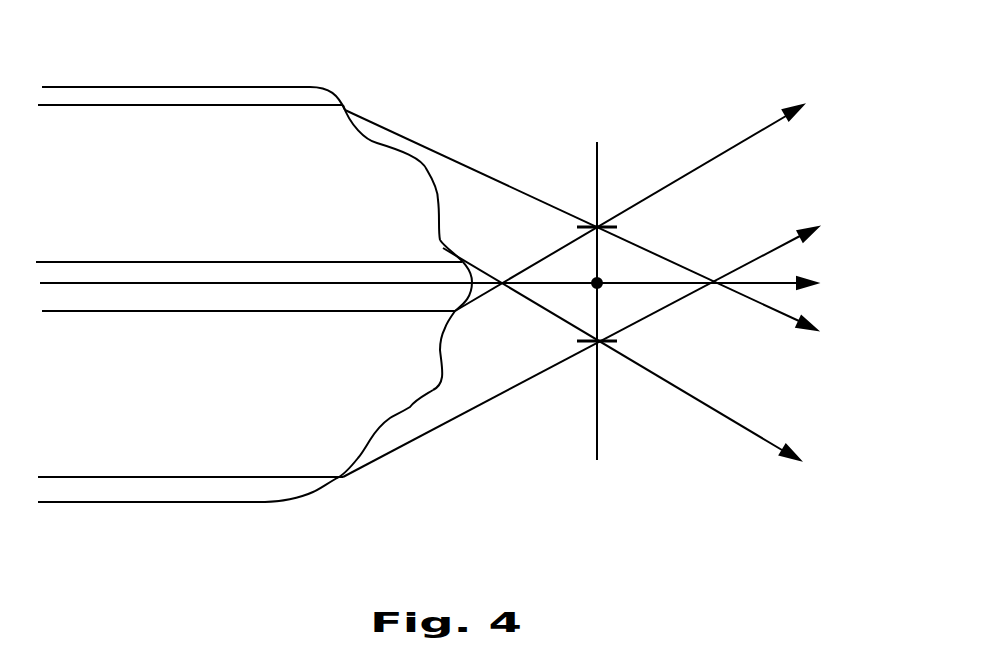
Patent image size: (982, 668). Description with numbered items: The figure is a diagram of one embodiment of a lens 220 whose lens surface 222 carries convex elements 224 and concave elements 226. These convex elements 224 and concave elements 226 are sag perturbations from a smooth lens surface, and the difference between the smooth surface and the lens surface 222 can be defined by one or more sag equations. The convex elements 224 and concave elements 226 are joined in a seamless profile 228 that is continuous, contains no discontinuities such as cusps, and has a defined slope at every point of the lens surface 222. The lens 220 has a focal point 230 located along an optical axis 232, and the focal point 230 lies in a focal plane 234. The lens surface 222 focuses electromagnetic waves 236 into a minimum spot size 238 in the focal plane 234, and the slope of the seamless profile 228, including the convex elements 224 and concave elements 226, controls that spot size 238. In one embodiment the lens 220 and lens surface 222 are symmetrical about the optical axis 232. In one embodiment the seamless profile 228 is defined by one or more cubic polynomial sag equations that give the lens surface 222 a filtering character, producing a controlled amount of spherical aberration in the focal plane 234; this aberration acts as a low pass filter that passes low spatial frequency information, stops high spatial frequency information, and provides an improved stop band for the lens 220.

The lens 220 is at (390, 78).
The lens surface 222 is at (363, 460).
The convex elements 224 is at (440, 383).
The concave elements 226 is at (387, 418).
The seamless profile 228 is at (440, 163).
The focal point 230 is at (602, 280).
The optical axis 232 is at (143, 284).
The focal plane 234 is at (597, 430).
The electromagnetic waves 236 is at (745, 283).
The spot size 238 is at (601, 210).